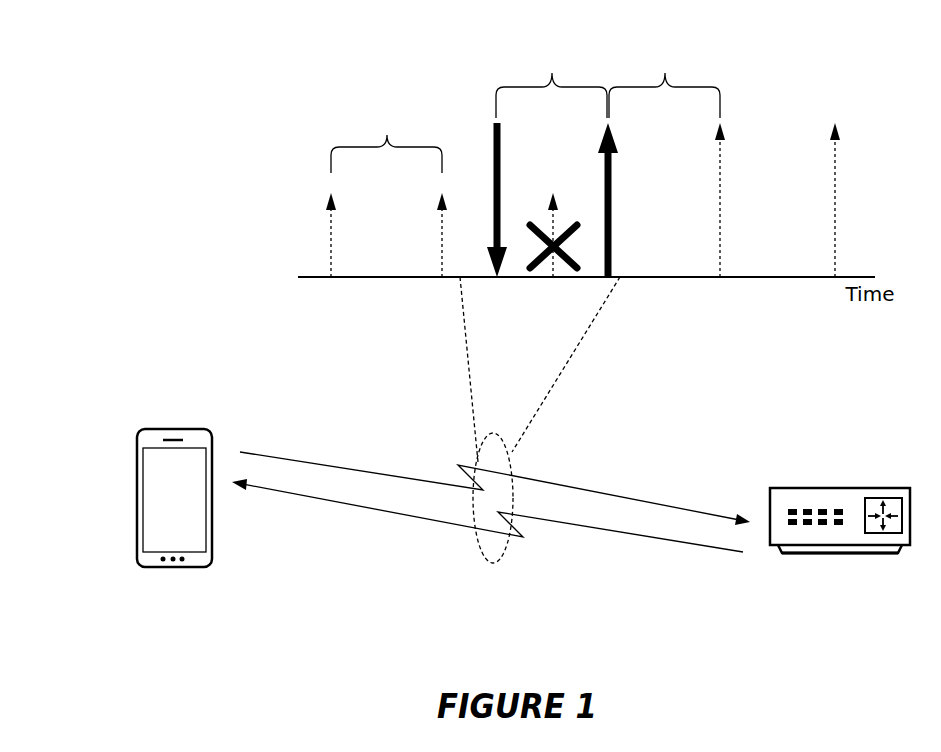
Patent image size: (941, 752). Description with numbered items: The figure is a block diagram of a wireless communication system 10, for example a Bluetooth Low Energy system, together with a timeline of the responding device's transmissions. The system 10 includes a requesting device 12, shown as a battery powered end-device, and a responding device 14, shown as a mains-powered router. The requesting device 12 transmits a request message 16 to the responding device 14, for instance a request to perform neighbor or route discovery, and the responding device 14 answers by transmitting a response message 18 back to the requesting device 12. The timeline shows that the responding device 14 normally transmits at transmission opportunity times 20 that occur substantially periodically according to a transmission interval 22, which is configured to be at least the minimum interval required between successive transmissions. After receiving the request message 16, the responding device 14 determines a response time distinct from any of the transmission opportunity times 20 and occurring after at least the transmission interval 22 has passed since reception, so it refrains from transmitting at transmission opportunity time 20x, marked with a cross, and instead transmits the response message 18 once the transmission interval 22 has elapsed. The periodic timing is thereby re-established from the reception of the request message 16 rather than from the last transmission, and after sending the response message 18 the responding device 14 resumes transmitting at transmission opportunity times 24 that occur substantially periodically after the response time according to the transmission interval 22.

The wireless communication system 10 is at (141, 236).
The requesting device 12 is at (173, 567).
The responding device 14 is at (832, 553).
The request message 16 is at (493, 147).
The response message 18 is at (612, 185).
The transmission opportunity times 20 is at (331, 253).
The transmission opportunity time 20x is at (554, 257).
The transmission interval 22 is at (525, 108).
The transmission opportunity times 24 is at (720, 247).